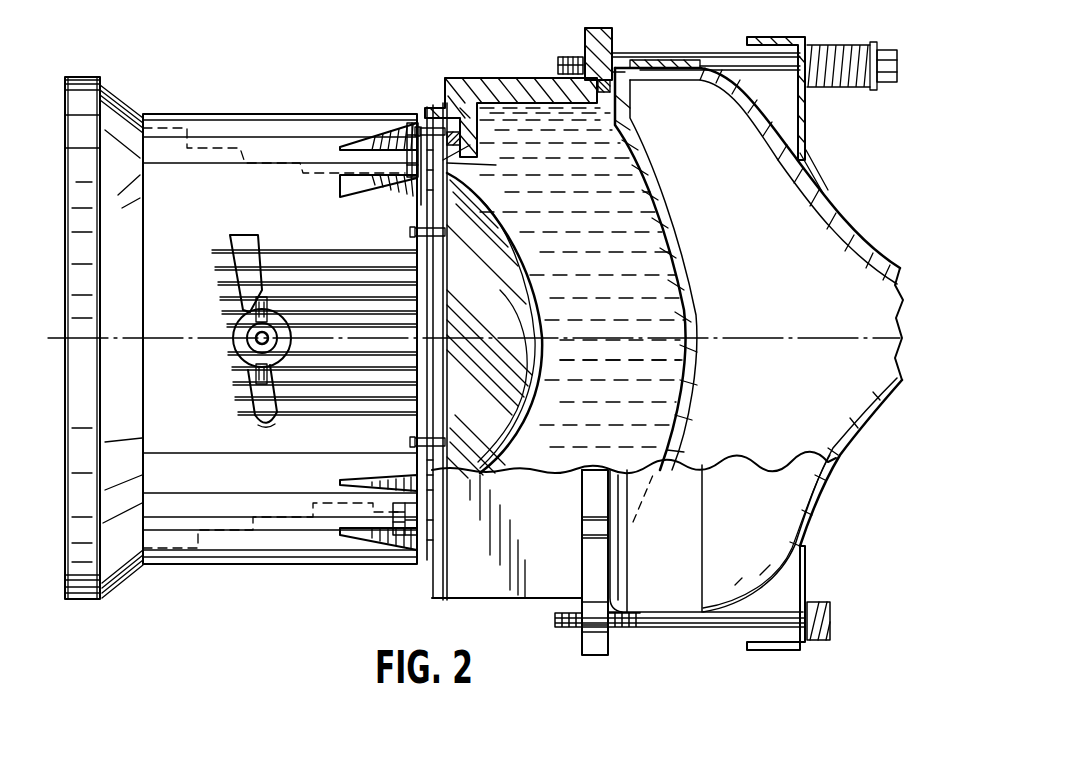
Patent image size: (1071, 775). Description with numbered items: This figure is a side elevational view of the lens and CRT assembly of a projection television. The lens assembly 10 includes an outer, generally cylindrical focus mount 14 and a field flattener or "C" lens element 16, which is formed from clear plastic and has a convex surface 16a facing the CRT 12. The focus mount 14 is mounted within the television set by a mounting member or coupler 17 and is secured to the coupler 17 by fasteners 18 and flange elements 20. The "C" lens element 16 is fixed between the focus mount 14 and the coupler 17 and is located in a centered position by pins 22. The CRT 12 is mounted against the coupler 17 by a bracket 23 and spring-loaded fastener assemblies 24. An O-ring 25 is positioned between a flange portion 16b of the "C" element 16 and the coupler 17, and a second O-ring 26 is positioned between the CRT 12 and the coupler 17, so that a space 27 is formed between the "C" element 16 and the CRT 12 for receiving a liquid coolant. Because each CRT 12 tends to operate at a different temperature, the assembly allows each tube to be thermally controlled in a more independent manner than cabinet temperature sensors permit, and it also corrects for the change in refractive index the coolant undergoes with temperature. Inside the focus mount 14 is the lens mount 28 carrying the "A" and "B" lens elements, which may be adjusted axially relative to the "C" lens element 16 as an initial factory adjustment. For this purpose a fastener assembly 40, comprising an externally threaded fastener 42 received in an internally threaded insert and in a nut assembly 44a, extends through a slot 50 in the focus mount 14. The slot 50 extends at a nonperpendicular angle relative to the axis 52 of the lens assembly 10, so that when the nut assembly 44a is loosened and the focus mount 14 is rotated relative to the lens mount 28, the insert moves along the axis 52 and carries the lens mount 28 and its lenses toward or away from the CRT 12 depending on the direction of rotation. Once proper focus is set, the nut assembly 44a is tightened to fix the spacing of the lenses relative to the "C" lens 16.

The lens assembly 10 is at (204, 78).
The CRT 12 is at (838, 220).
The focus mount 14 is at (303, 114).
The "C" lens element 16 is at (520, 240).
The convex surface 16a is at (550, 320).
The flange portion 16b is at (538, 185).
The coupler 17 is at (584, 42).
The fasteners 18 is at (392, 522).
The flange elements 20 is at (405, 150).
The pins 22 is at (430, 112).
The bracket 23 is at (802, 37).
The spring-loaded fastener assemblies 24 is at (889, 95).
The O-ring 25 is at (477, 138).
The O-ring 26 is at (612, 88).
The space 27 is at (602, 408).
The lens mount 28 is at (245, 233).
The fastener assembly 40 is at (236, 362).
The externally threaded fastener 42 is at (258, 345).
The nut assembly 44a is at (240, 335).
The slot 50 is at (218, 253).
The axis 52 is at (812, 326).